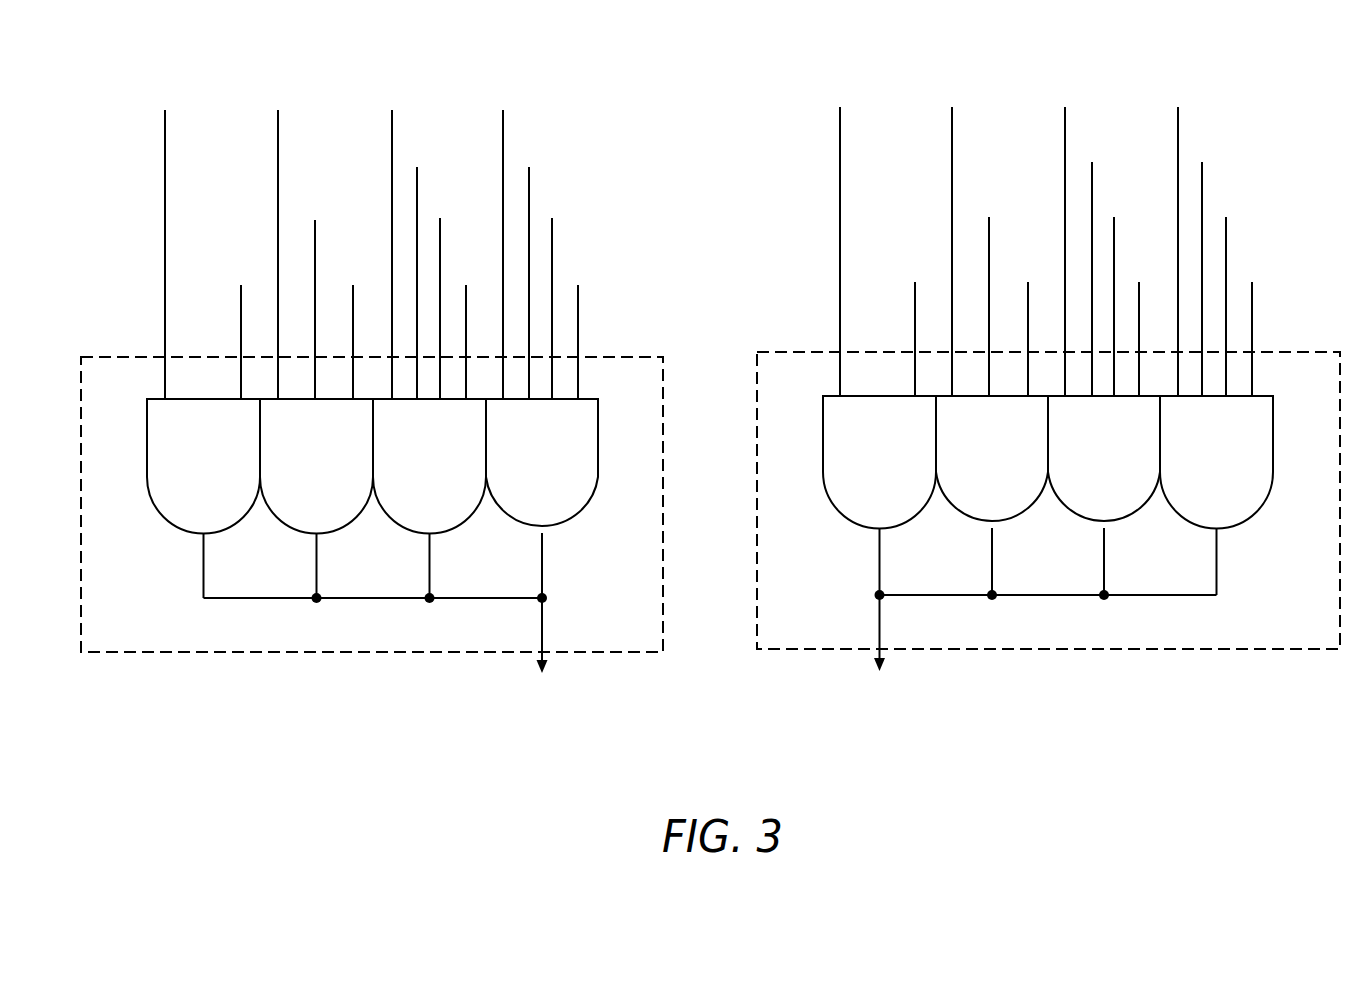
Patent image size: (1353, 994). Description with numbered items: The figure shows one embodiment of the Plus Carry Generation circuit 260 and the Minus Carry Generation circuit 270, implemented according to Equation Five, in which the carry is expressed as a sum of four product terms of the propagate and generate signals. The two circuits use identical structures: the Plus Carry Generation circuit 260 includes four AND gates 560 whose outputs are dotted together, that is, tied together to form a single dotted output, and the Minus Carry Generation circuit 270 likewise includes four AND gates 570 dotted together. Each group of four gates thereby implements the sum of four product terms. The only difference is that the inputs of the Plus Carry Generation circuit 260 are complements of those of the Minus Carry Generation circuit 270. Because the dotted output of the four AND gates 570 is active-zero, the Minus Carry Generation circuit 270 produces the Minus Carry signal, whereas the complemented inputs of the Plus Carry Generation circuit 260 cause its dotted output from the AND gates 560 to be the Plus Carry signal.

The Plus Carry Generation circuit 260 is at (113, 357).
The Minus Carry Generation circuit 270 is at (1336, 352).
The AND gate 560 is at (167, 508).
The AND gate 570 is at (843, 504).